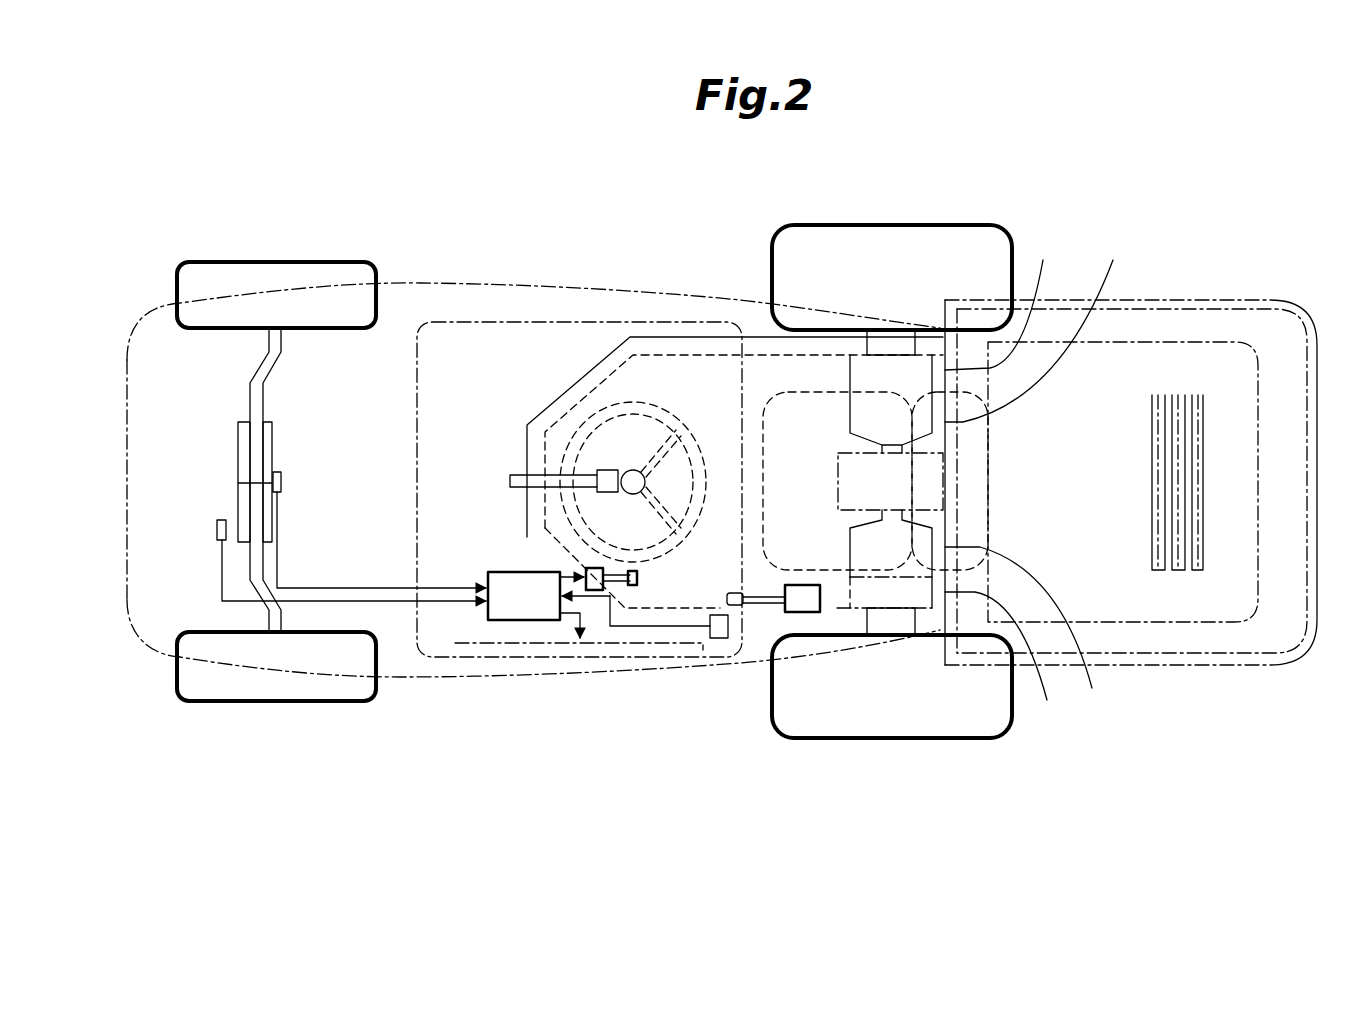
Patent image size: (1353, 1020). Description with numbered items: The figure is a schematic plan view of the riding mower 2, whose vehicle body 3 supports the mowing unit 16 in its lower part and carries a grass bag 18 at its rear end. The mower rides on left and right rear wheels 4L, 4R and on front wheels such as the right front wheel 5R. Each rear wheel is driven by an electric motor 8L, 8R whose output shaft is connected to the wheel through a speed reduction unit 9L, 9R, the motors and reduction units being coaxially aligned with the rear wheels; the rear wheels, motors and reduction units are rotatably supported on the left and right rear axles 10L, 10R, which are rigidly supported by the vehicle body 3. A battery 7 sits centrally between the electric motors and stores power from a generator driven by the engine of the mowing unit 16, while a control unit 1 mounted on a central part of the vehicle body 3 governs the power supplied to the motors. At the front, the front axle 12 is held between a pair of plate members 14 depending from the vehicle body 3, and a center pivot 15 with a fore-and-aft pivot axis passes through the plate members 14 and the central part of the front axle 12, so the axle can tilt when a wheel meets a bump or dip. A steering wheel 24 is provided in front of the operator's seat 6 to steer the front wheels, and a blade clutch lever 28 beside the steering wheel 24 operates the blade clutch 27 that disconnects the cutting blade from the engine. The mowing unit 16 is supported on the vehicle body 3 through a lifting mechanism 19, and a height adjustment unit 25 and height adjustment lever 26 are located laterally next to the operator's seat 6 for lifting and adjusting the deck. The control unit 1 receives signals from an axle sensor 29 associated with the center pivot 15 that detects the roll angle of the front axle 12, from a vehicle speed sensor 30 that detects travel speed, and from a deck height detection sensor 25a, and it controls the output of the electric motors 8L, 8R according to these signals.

The control unit 1 is at (486, 622).
The riding mower 2 is at (537, 238).
The vehicle body 3 is at (137, 317).
The left rear wheel 4L is at (918, 738).
The right rear wheel 4R is at (935, 225).
The right front wheel 5R is at (303, 262).
The operator's seat 6 is at (780, 393).
The battery 7 is at (945, 478).
The left electric motor 8L is at (1028, 631).
The right electric motor 8R is at (1035, 326).
The left speed reduction unit 9L is at (318, 702).
The right speed reduction unit 9R is at (1000, 301).
The left rear axle 10L is at (867, 622).
The right rear axle 10R is at (867, 340).
The front axle 12 is at (252, 410).
The plate members 14 is at (240, 457).
The center pivot 15 is at (242, 485).
The mowing unit 16 is at (441, 322).
The grass bag 18 is at (1262, 298).
The lifting mechanism 19 is at (455, 645).
The steering wheel 24 is at (640, 400).
The height adjustment unit 25 is at (800, 602).
The deck height detection sensor 25a is at (720, 640).
The height adjustment lever 26 is at (757, 606).
The blade clutch 27 is at (596, 592).
The blade clutch lever 28 is at (624, 586).
The axle sensor 29 is at (283, 483).
The vehicle speed sensor 30 is at (217, 532).